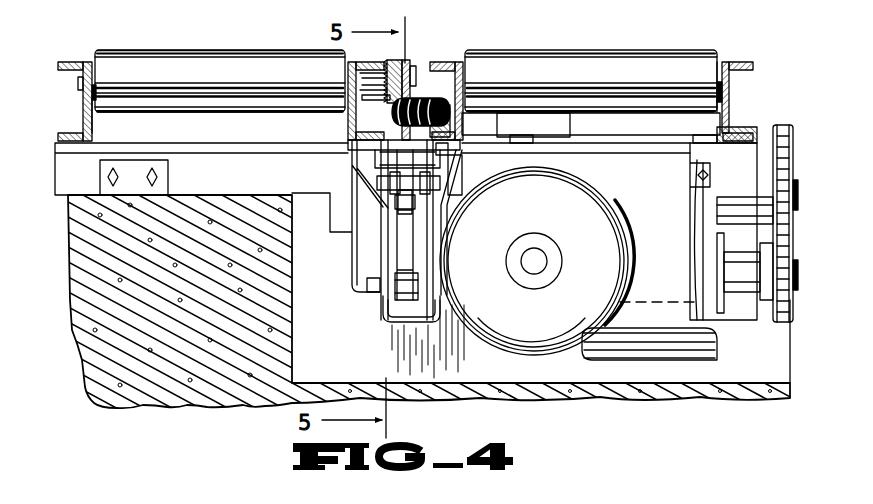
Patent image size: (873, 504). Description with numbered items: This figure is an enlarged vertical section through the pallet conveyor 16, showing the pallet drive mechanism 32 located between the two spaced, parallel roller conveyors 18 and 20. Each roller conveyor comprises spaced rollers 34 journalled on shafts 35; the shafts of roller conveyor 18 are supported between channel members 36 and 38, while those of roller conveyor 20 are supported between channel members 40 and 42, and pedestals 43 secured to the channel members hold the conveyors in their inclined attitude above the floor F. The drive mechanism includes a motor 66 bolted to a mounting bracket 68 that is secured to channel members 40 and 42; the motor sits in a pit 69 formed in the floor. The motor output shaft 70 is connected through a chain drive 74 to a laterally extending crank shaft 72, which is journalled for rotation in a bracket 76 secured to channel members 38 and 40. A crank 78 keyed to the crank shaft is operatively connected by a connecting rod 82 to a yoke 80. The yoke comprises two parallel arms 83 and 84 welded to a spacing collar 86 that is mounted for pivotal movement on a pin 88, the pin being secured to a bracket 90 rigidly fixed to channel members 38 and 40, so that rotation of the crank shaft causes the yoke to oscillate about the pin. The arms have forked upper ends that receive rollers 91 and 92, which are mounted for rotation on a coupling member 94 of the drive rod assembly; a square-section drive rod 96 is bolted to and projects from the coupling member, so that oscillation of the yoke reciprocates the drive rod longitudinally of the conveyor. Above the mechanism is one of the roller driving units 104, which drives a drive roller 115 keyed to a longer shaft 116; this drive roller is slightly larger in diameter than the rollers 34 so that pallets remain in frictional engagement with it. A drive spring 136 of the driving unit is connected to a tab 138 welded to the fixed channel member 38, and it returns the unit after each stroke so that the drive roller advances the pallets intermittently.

The pallet conveyor 16 is at (705, 47).
The roller conveyor 18 is at (75, 62).
The roller conveyor 20 is at (733, 67).
The pallet drive mechanism 32 is at (375, 179).
The rollers 34 is at (128, 77).
The shafts 35 is at (77, 82).
The channel member 36 is at (80, 116).
The channel member 38 is at (352, 63).
The channel member 40 is at (443, 63).
The channel member 42 is at (729, 97).
The pedestals 43 is at (221, 183).
The motor 66 is at (571, 226).
The mounting bracket 68 is at (617, 110).
The pit 69 is at (375, 383).
The motor output shaft 70 is at (748, 283).
The crank shaft 72 is at (730, 212).
The chain drive 74 is at (775, 320).
The bracket 76 is at (350, 215).
The crank 78 is at (458, 170).
The yoke 80 is at (388, 242).
The connecting rod 82 is at (407, 203).
The arm 83 is at (388, 258).
The arm 84 is at (433, 255).
The spacing collar 86 is at (400, 293).
The pin 88 is at (367, 290).
The bracket 90 is at (383, 316).
The roller 91 is at (390, 148).
The roller 92 is at (426, 128).
The coupling member 94 is at (441, 148).
The drive rod 96 is at (398, 158).
The roller driving unit 104 is at (410, 63).
The drive roller 115 is at (172, 52).
The shaft 116 is at (88, 92).
The drive spring 136 is at (396, 102).
The tab 138 is at (492, 125).
The floor F is at (75, 195).